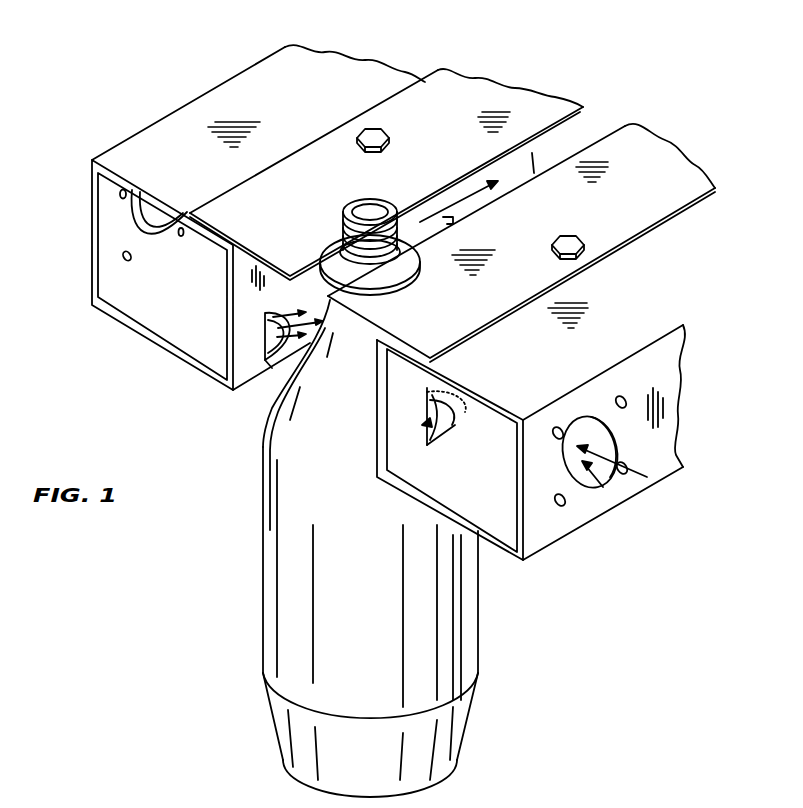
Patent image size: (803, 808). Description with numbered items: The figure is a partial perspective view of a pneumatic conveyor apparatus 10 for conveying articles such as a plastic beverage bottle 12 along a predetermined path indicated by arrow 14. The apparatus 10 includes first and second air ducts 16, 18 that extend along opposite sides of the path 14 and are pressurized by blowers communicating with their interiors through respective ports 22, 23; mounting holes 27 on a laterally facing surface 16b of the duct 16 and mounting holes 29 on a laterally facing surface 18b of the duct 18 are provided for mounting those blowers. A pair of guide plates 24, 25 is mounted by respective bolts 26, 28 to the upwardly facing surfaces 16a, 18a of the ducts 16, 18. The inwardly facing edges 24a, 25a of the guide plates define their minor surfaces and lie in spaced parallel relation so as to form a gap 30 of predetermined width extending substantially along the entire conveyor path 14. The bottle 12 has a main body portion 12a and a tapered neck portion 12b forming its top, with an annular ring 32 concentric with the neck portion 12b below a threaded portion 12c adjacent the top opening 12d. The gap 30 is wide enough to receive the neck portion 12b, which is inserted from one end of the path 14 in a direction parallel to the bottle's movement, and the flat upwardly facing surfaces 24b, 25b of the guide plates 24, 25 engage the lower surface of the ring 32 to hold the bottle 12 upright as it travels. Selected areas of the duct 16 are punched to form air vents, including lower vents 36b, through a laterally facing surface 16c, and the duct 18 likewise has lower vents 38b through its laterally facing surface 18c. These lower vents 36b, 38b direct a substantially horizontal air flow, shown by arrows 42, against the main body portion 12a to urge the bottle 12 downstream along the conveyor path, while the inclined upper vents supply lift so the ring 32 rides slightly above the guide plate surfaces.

The apparatus 10 is at (396, 30).
The plastic beverage bottle 12 is at (240, 617).
The main body portion 12a is at (262, 537).
The tapered neck portion 12b is at (331, 313).
The threaded portion 12c is at (338, 246).
The top opening 12d is at (374, 210).
The predetermined path 14 is at (456, 196).
The first air duct 16 is at (222, 88).
The upwardly facing surface of duct 16 16a is at (313, 78).
The laterally facing surface of duct 16 16b is at (100, 278).
The laterally facing surface of duct 16 16c is at (233, 392).
The second air duct 18 is at (684, 326).
The upwardly facing surface of duct 18 18a is at (644, 303).
The laterally facing surface of duct 18 18b is at (672, 395).
The laterally facing surface of duct 18 18c is at (390, 428).
The port 22 is at (150, 217).
The port 23 is at (603, 487).
The guide plate 24 is at (408, 80).
The inwardly facing edge 24a is at (598, 125).
The upwardly facing surface 24b is at (490, 96).
The guide plate 25 is at (673, 186).
The inwardly facing edge 25a is at (617, 124).
The upwardly facing surface 25b is at (683, 172).
The bolt 26 is at (386, 135).
The mounting holes 27 is at (118, 198).
The bolt 28 is at (582, 243).
The mounting holes 29 is at (617, 400).
The gap 30 is at (560, 140).
The annular ring 32 is at (320, 245).
The lower air vents 36b is at (265, 338).
The lower air vents 38b is at (468, 430).
The arrows 42 is at (268, 364).